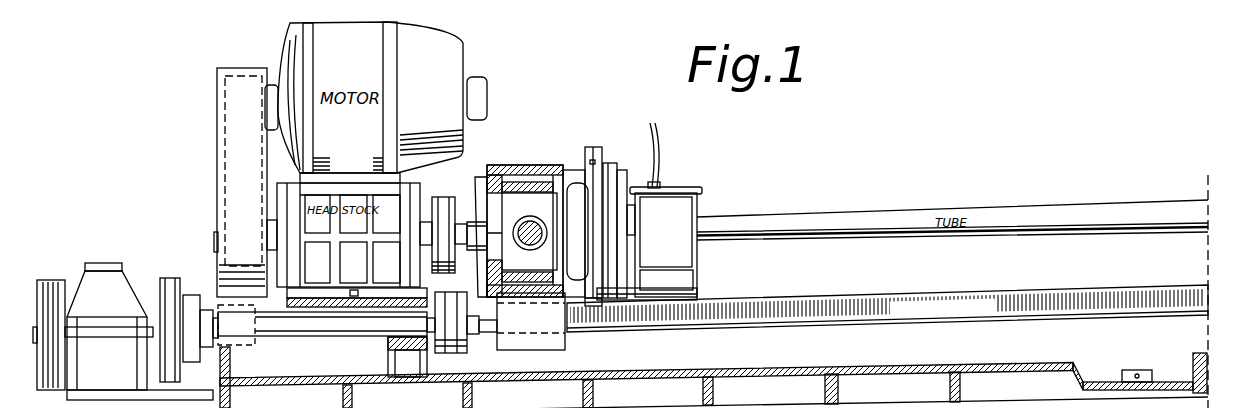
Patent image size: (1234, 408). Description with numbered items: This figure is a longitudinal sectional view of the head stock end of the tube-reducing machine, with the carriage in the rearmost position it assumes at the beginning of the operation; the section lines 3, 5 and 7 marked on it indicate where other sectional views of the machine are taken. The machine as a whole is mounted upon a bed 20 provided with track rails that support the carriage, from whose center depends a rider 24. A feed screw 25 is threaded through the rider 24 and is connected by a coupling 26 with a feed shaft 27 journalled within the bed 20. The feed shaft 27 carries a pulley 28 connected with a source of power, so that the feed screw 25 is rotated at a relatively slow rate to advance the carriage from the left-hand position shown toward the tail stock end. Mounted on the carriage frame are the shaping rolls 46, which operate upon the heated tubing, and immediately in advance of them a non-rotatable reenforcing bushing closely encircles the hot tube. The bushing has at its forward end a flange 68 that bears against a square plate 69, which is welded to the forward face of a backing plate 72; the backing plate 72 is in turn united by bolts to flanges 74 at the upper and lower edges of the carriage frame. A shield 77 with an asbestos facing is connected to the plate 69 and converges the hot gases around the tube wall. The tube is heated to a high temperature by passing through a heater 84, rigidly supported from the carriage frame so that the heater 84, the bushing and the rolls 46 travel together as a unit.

The section line 3- 3 is at (583, 143).
The section line 5- 5 is at (622, 162).
The section line 7- 7 is at (462, 238).
The bed 20 is at (842, 367).
The rider 24 is at (533, 345).
The feed screw 25 is at (748, 330).
The coupling 26 is at (448, 353).
The feed shaft 27 is at (313, 340).
The pulley 28 is at (97, 282).
The shaping rolls 46 is at (560, 170).
The flange 68 is at (617, 208).
The square plate 69 is at (608, 172).
The backing plate 72 is at (593, 178).
The flanges 74 is at (587, 153).
The shield 77 is at (645, 257).
The heater 84 is at (665, 217).